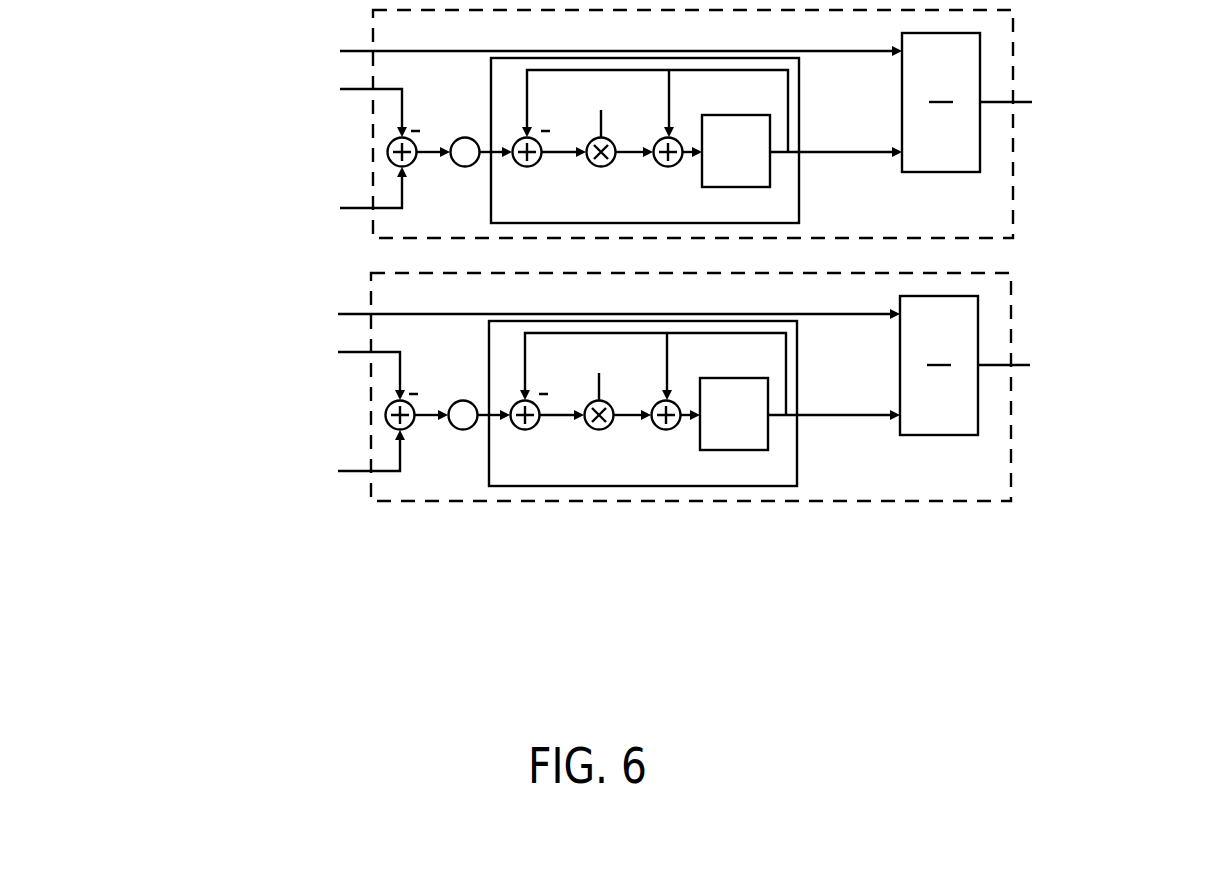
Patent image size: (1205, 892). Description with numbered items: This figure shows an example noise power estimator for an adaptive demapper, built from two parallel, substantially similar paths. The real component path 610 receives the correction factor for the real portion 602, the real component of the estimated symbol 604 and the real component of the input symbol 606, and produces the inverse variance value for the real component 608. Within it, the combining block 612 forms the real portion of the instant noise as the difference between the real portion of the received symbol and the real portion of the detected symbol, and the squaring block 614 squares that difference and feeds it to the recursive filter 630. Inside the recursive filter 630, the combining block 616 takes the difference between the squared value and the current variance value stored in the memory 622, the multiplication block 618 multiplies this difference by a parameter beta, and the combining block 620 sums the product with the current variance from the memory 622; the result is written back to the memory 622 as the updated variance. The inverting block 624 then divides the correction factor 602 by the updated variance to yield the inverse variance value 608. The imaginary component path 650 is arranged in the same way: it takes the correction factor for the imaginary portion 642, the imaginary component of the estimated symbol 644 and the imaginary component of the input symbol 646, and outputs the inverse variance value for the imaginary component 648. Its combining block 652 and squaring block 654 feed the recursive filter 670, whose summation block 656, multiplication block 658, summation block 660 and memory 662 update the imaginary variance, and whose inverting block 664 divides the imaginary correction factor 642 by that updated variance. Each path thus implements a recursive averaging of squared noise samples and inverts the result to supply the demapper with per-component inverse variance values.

The correction factor for the real portion 602 is at (300, 58).
The real component of the estimated symbol 604 is at (300, 100).
The real component of the input symbol 606 is at (300, 216).
The inverse variance value for the real component 608 is at (1156, 115).
The real component path 610 is at (428, 35).
The combining block 612 is at (413, 162).
The squaring block 614 is at (461, 137).
The combining block 616 is at (525, 167).
The multiplication block 618 is at (601, 167).
The combining block 620 is at (668, 167).
The memory 622 is at (736, 114).
The inverting block 624 is at (942, 172).
The recursive filter 630 is at (782, 215).
The correction factor for the imaginary portion 642 is at (511, 311).
The imaginary component of the estimated symbol 644 is at (258, 369).
The imaginary component of the input symbol 646 is at (263, 454).
The inverse variance value for the imaginary component 648 is at (1077, 366).
The imaginary component path 650 is at (644, 387).
The combining block 652 is at (428, 427).
The squaring block 654 is at (480, 388).
The summation block 656 is at (548, 432).
The multiplication block 658 is at (617, 413).
The summation block 660 is at (675, 441).
The memory 662 is at (734, 391).
The inverting block 664 is at (939, 392).
The recursive filter 670 is at (694, 403).